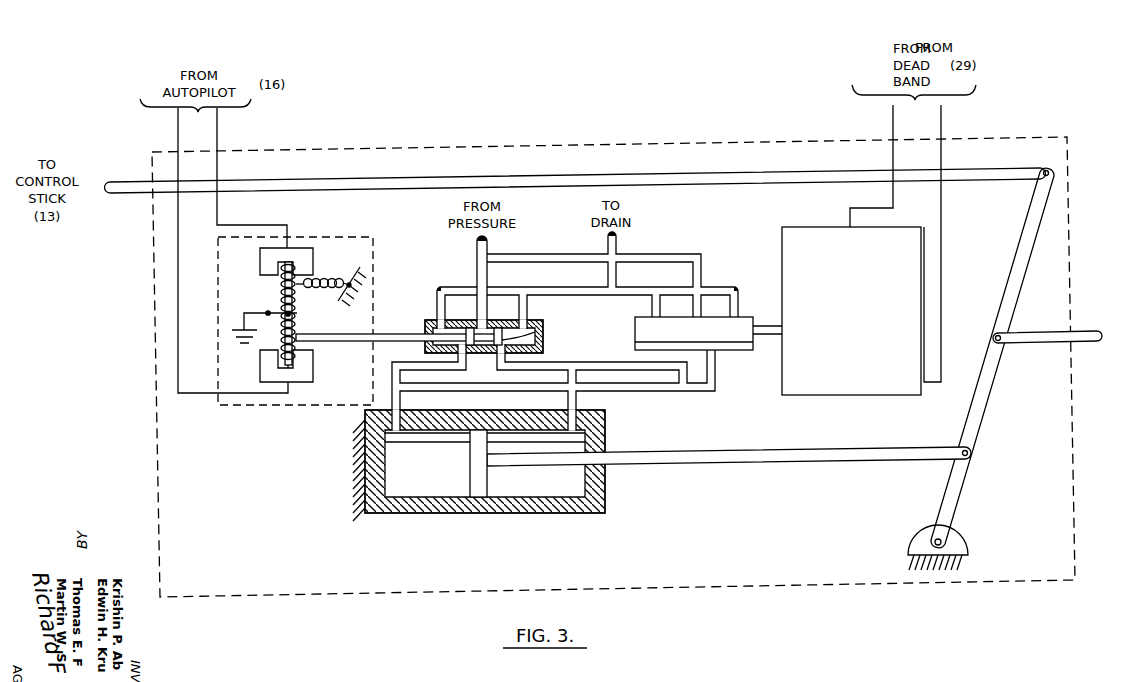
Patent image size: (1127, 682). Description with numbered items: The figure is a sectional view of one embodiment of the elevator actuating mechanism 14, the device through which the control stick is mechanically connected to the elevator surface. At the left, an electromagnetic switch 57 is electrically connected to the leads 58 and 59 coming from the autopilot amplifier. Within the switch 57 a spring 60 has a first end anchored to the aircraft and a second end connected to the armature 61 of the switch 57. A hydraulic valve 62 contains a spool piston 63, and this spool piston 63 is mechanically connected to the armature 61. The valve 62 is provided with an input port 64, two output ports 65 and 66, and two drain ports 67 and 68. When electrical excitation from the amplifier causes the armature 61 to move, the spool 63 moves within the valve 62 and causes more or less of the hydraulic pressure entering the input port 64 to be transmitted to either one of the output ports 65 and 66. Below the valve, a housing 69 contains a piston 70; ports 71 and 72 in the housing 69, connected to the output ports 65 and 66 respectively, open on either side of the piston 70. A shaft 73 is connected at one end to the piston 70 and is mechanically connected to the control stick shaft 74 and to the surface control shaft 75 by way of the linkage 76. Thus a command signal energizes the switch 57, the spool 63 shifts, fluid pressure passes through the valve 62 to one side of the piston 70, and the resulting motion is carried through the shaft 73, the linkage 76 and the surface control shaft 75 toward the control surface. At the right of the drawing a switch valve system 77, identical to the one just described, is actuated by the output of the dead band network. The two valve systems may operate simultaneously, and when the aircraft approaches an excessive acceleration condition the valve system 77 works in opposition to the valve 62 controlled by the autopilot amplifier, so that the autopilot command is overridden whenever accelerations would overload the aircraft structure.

The elevator actuating mechanism 14 is at (848, 560).
The electromagnetic switch 57 is at (360, 256).
The lead 58 is at (177, 127).
The lead 59 is at (216, 128).
The spring 60 is at (323, 275).
The armature 61 is at (288, 285).
The hydraulic valve 62 is at (422, 325).
The spool piston 63 is at (451, 321).
The input port 64 is at (489, 319).
The output port 65 is at (461, 356).
The output port 66 is at (504, 355).
The drain port 67 is at (443, 319).
The drain port 68 is at (530, 319).
The housing 69 is at (537, 503).
The piston 70 is at (477, 463).
The port 71 is at (893, 115).
The port 72 is at (941, 115).
The shaft 73 is at (700, 460).
The control stick shaft 74 is at (755, 176).
The surface control shaft 75 is at (1027, 338).
The linkage 76 is at (985, 405).
The switch valve system 77 is at (773, 351).